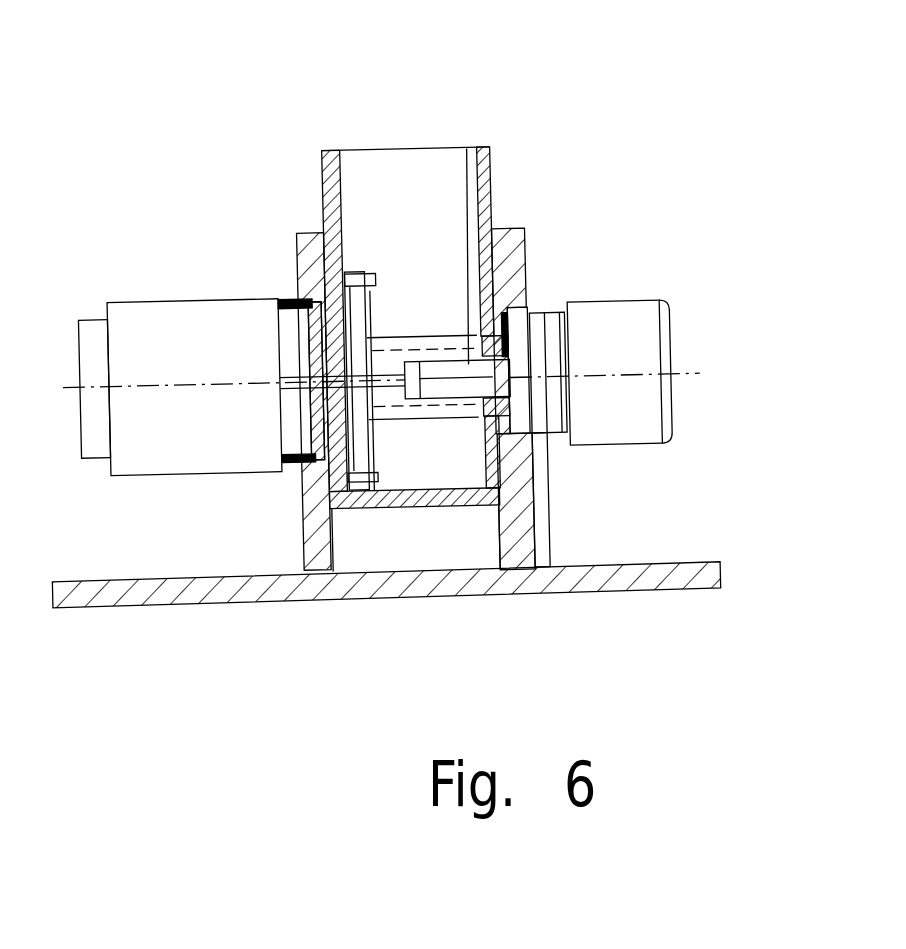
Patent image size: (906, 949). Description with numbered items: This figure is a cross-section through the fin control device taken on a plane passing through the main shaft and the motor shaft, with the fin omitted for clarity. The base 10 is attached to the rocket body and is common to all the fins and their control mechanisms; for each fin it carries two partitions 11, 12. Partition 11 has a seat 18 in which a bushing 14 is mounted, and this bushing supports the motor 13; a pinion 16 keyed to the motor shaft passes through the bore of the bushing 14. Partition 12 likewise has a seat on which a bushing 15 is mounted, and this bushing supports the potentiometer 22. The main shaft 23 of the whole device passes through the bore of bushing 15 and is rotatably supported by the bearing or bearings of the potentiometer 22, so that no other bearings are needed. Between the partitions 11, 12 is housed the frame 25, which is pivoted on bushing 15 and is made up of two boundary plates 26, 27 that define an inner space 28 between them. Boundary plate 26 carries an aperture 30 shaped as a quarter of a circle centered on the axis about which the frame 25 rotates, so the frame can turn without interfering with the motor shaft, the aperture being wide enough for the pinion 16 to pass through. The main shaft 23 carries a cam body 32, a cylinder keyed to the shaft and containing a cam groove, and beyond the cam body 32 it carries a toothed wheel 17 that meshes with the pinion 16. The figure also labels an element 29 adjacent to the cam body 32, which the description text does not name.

The base 10 is at (408, 360).
The partition 11 is at (318, 582).
The partition 12 is at (533, 526).
The motor 13 is at (142, 322).
The bushing 14 is at (300, 463).
The bushing 15 is at (522, 307).
The pinion 16 is at (333, 540).
The toothed wheel 17 is at (358, 272).
The seat 18 is at (299, 305).
The potentiometer 22 is at (620, 318).
The main shaft 23 is at (473, 150).
The frame 25 is at (494, 188).
The boundary plate 26 is at (327, 180).
The boundary plate 27 is at (485, 213).
The inner space 28 is at (462, 185).
The hub 29 is at (480, 418).
The aperture 30 is at (300, 467).
The cam body 32 is at (390, 410).